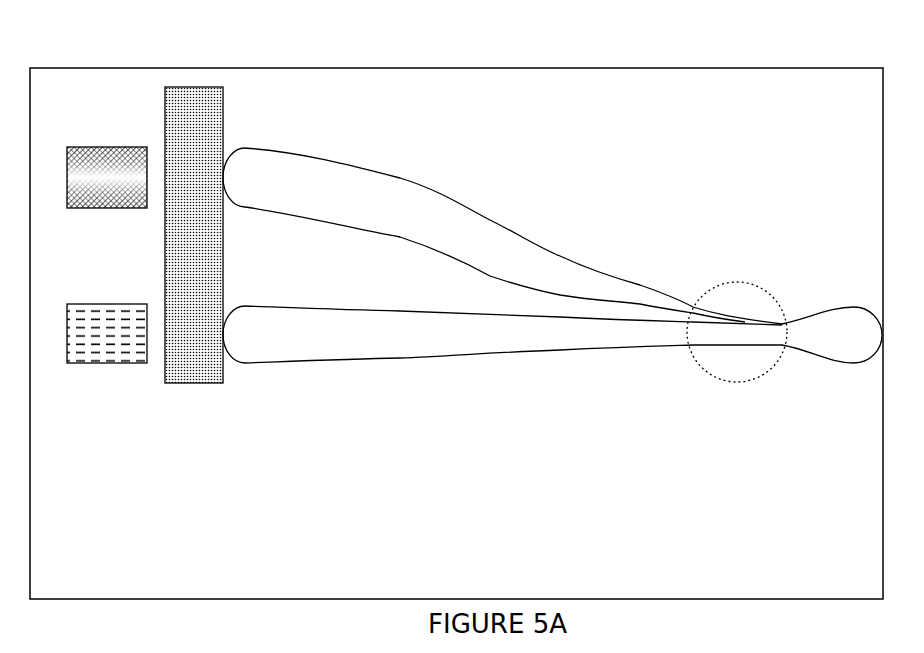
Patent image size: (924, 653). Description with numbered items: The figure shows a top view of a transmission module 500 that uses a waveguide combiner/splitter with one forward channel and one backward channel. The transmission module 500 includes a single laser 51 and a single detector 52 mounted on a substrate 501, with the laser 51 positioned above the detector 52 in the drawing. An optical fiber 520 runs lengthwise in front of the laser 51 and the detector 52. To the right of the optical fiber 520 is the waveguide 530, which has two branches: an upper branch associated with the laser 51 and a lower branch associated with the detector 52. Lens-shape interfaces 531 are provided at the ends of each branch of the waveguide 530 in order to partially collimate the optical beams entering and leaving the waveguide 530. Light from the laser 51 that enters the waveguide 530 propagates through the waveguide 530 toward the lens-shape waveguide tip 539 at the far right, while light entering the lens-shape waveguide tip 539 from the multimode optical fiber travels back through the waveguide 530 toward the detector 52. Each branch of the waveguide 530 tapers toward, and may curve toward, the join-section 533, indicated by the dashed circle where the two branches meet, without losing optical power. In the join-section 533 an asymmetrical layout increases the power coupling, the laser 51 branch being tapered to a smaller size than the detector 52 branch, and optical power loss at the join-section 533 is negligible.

The transmission module 500 is at (717, 28).
The substrate 501 is at (157, 29).
The laser 51 is at (125, 147).
The detector 52 is at (125, 304).
The optical fiber 520 is at (197, 87).
The waveguide 530 is at (492, 313).
The lens-shape interfaces 531 is at (238, 305).
The join-section 533 is at (758, 290).
The lens-shape waveguide tip 539 is at (873, 317).